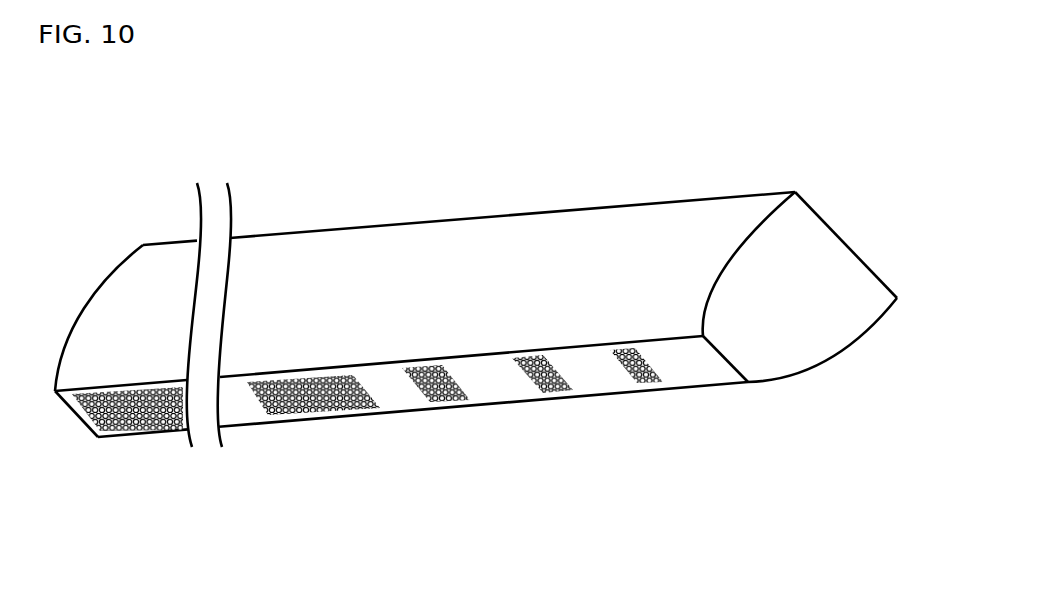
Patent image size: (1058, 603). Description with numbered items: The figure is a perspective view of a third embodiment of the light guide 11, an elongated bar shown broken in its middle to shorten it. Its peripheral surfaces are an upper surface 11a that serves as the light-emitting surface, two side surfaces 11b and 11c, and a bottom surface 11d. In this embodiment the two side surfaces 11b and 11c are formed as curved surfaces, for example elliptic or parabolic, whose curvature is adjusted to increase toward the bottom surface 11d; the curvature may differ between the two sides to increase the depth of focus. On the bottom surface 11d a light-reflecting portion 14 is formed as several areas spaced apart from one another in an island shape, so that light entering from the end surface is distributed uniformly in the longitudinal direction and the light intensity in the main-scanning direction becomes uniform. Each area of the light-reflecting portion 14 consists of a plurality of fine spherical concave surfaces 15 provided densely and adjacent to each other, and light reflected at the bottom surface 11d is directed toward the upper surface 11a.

The light guide 11 is at (433, 212).
The upper surface 11a is at (842, 238).
The side surface 11b is at (593, 258).
The side surface 11c is at (822, 360).
The bottom surface 11d is at (607, 377).
The light-reflecting portion 14 is at (143, 430).
The fine spherical concave surfaces 15 is at (348, 412).